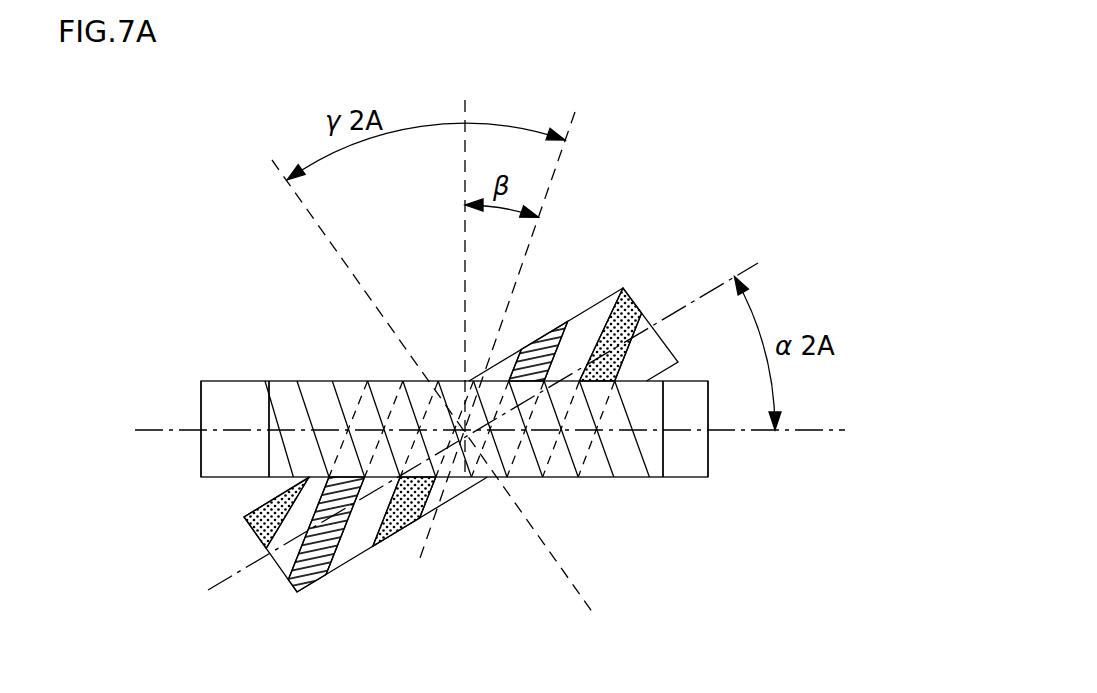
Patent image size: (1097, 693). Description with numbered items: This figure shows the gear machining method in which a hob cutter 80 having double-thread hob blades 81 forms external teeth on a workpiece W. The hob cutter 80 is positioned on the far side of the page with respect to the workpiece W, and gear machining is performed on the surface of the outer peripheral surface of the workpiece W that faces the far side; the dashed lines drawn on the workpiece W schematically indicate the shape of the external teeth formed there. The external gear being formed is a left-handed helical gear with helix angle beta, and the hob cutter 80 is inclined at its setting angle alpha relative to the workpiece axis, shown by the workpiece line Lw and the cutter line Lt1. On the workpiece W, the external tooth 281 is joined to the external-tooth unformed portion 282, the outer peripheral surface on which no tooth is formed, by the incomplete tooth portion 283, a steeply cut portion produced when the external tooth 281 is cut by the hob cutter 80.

The hob cutter 80 is at (636, 265).
The hob blades 81 is at (622, 289).
The external tooth 281 is at (319, 388).
The external-tooth unformed portion 282 is at (221, 390).
The incomplete tooth portion 283 is at (268, 385).
The workpiece W is at (193, 373).
The workpiece axis Lw is at (838, 430).
The tool axis Lt1 is at (235, 572).